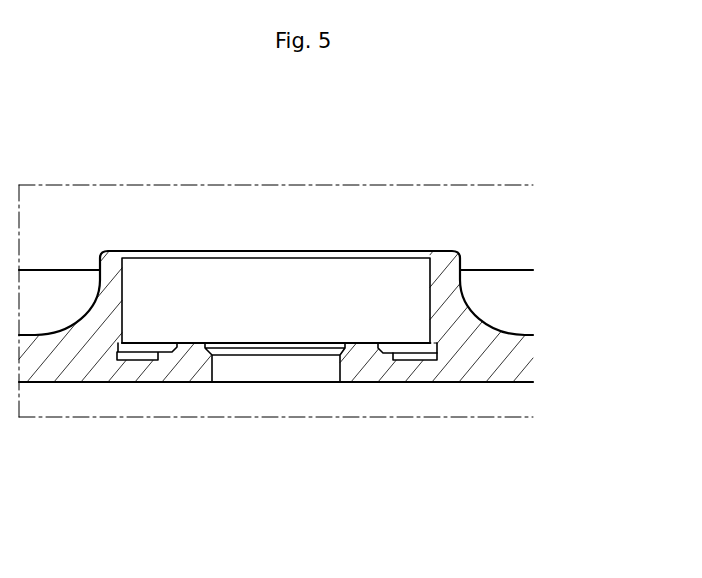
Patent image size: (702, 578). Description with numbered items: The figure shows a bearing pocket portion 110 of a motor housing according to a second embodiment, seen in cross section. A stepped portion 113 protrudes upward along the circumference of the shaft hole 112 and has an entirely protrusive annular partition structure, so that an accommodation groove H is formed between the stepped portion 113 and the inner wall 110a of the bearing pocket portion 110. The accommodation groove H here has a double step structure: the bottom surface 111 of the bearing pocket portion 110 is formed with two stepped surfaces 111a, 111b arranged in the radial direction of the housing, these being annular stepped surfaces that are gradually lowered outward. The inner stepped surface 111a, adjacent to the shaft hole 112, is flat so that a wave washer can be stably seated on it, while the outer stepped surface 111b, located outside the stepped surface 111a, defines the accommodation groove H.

The bearing pocket portion 110 is at (443, 292).
The inner wall 110a is at (127, 302).
The bottom surface 111 is at (475, 480).
The stepped surface 111a is at (392, 358).
The stepped surface 111b is at (415, 360).
The shaft hole 112 is at (210, 370).
The stepped portion 113 is at (362, 347).
The accommodation groove H is at (440, 343).